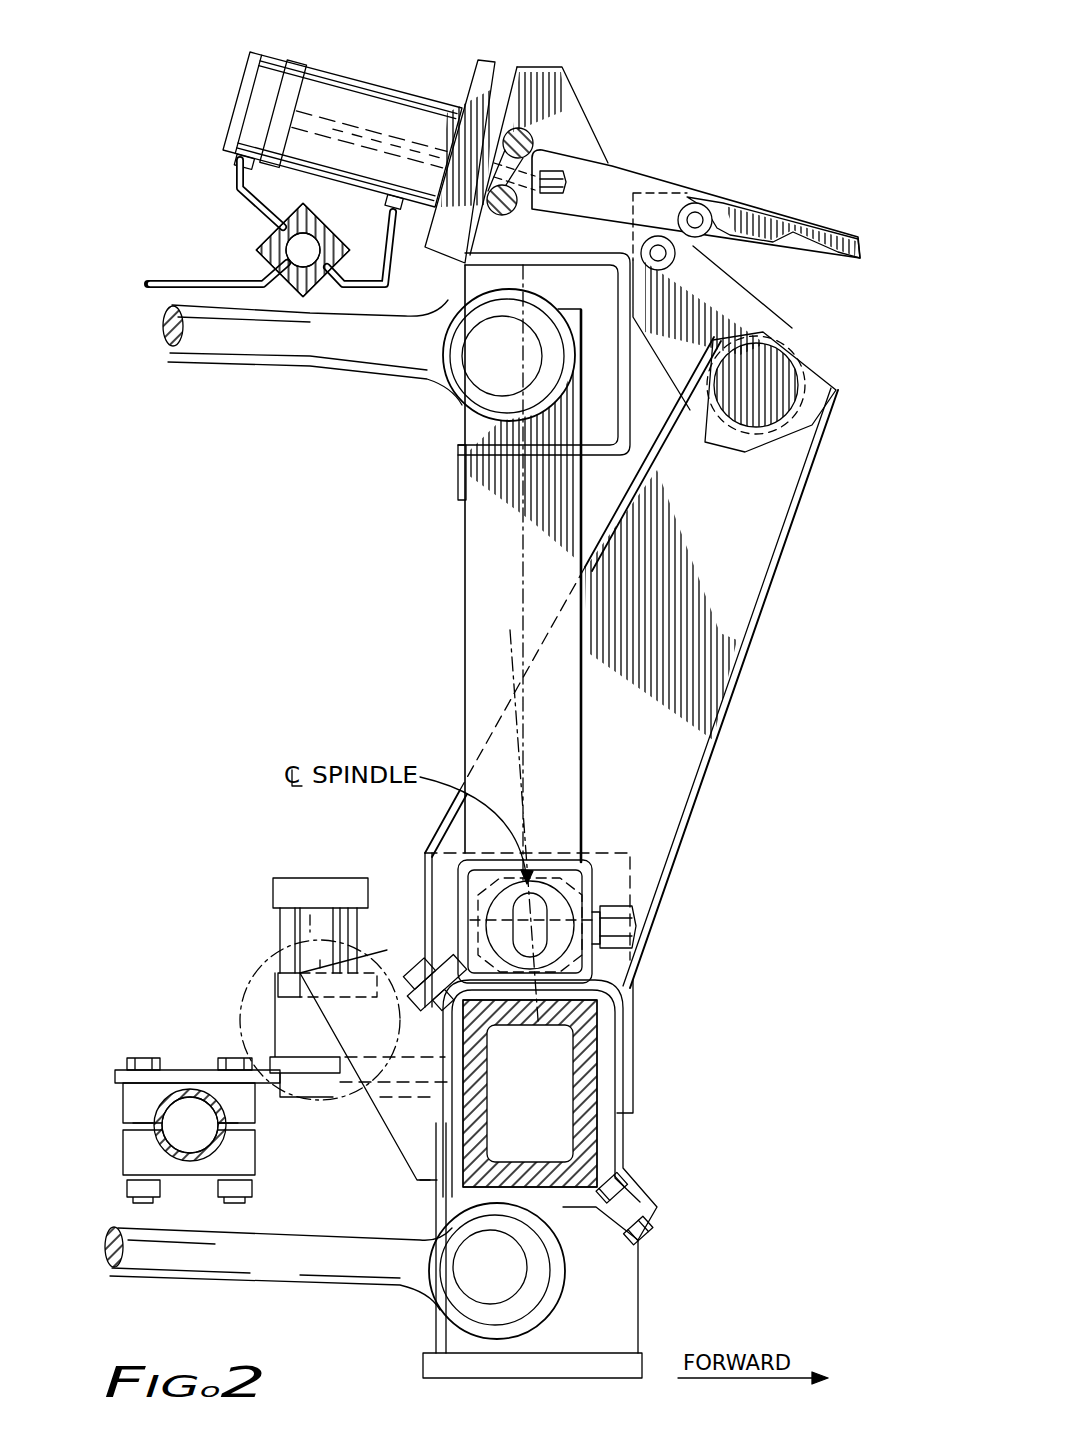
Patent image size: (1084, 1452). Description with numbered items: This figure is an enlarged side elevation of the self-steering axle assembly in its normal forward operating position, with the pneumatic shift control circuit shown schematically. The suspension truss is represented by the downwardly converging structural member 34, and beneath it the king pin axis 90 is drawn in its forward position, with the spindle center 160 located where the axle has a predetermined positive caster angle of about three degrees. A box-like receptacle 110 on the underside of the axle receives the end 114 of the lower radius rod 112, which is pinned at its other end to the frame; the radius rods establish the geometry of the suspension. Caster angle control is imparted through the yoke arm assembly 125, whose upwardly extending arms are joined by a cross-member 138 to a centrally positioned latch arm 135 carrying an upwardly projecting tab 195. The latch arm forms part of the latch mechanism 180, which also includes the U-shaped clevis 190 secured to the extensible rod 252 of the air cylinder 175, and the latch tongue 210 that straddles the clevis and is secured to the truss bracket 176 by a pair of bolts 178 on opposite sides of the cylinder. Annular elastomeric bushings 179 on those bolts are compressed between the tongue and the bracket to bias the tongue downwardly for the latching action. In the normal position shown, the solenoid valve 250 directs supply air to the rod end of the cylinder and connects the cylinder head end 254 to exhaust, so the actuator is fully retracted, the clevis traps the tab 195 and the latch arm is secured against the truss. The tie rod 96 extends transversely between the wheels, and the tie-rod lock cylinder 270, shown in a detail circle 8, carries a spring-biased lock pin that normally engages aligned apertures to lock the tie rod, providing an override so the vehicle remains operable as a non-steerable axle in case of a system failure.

The detail circle 8 is at (245, 995).
The structural member 34 is at (467, 610).
The king pin axis 90 is at (547, 1103).
The tie rod 96 is at (153, 1135).
The box-like receptacle 110 is at (634, 1286).
The radius rod 112 is at (270, 1248).
The end of radius rod 114 is at (450, 1292).
The yoke arm assembly 125 is at (770, 608).
The latch arm 135 is at (762, 306).
The cross-member 138 is at (783, 367).
The spindle center 160 is at (534, 872).
The air cylinder 175 is at (272, 52).
The bracket 176 is at (526, 66).
The bolts 178 is at (522, 140).
The resilient bushing 179 is at (524, 211).
The latch mechanism 180 is at (693, 174).
The clevis 190 is at (618, 182).
The tab 195 is at (578, 150).
The latch tongue 210 is at (780, 223).
The solenoid valve 250 is at (353, 267).
The extensible rod 252 is at (378, 97).
The cylinder head end 254 is at (250, 86).
The lock cylinder 270 is at (330, 890).